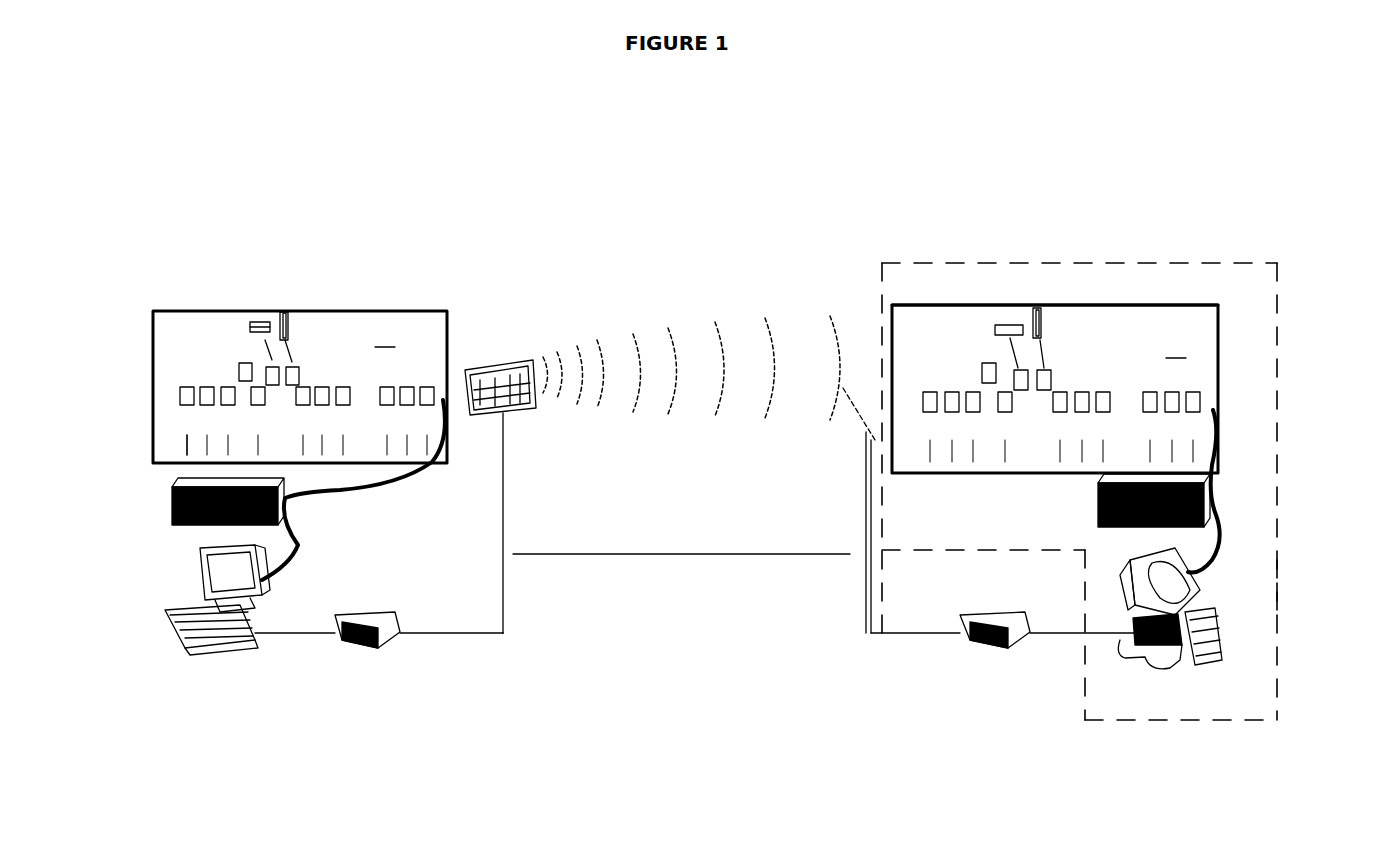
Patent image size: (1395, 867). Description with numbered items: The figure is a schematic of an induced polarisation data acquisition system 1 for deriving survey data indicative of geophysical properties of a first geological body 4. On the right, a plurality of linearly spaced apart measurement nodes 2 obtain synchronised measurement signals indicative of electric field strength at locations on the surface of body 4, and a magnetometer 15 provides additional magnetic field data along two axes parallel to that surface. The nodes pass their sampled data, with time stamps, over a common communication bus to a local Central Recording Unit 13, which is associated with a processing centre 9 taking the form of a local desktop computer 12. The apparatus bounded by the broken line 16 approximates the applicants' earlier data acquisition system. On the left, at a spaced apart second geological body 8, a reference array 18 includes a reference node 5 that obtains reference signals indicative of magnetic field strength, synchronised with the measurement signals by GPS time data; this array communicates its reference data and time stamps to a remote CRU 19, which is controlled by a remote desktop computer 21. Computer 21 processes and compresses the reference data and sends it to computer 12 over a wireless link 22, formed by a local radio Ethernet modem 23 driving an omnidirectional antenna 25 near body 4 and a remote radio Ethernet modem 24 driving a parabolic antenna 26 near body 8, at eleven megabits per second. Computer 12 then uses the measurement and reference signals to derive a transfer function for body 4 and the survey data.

The induced polarisation data acquisition system 1 is at (651, 790).
The measurement nodes 2 is at (1126, 338).
The first geological body 4 is at (935, 305).
The reference node 5 is at (322, 322).
The second geological body 8 is at (170, 310).
The processing centre 9 is at (1260, 606).
The local desktop computer 12 is at (1160, 640).
The local Central Recording Unit 13 is at (1232, 505).
The magnetometer 15 is at (1074, 320).
The broken line 16 is at (1283, 318).
The reference array 18 is at (176, 432).
The remote CRU 19 is at (172, 512).
The remote desktop computer 21 is at (168, 663).
The wireless link 22 is at (693, 262).
The local radio Ethernet modem 23 is at (992, 678).
The remote radio Ethernet modem 24 is at (367, 682).
The omnidirectional antenna 25 is at (852, 468).
The parabolic antenna 26 is at (502, 336).